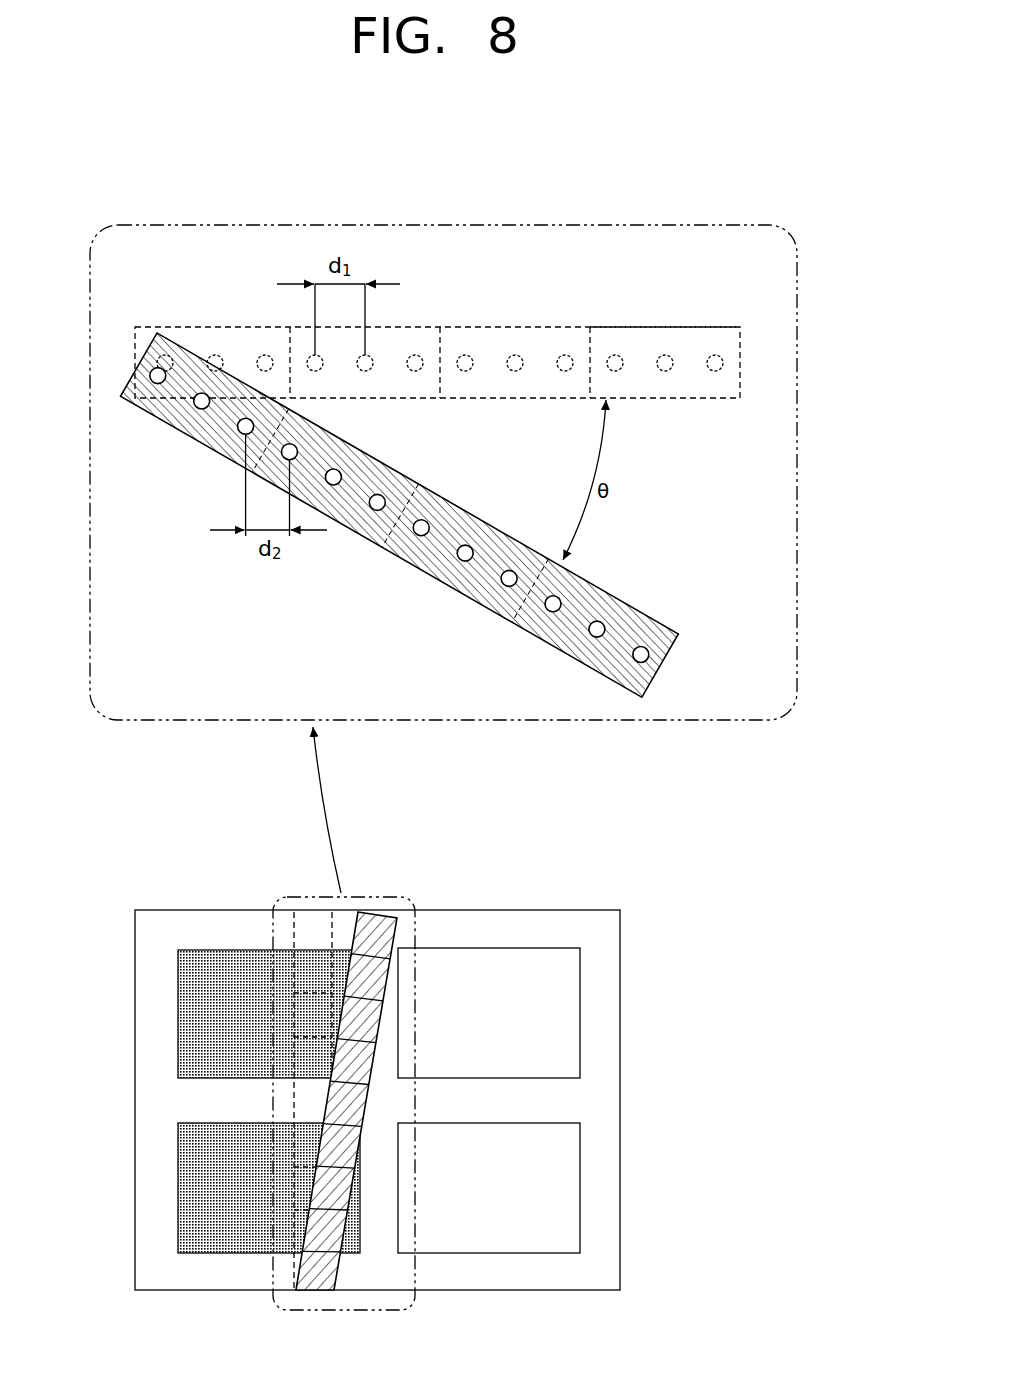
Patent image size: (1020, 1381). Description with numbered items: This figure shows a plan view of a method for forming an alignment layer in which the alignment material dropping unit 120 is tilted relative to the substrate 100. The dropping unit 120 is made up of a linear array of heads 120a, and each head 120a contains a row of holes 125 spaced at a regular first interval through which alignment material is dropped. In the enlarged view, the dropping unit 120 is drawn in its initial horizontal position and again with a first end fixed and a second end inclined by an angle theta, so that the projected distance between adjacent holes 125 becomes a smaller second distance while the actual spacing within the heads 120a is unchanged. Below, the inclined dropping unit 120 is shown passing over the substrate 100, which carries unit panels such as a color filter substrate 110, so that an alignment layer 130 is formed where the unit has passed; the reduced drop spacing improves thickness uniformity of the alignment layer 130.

The substrate 100 is at (627, 902).
The color filter substrate 110 is at (483, 945).
The alignment material dropping unit 120 is at (655, 324).
The head 120a is at (722, 335).
The hole 125 is at (465, 356).
The alignment layer 130 is at (229, 958).